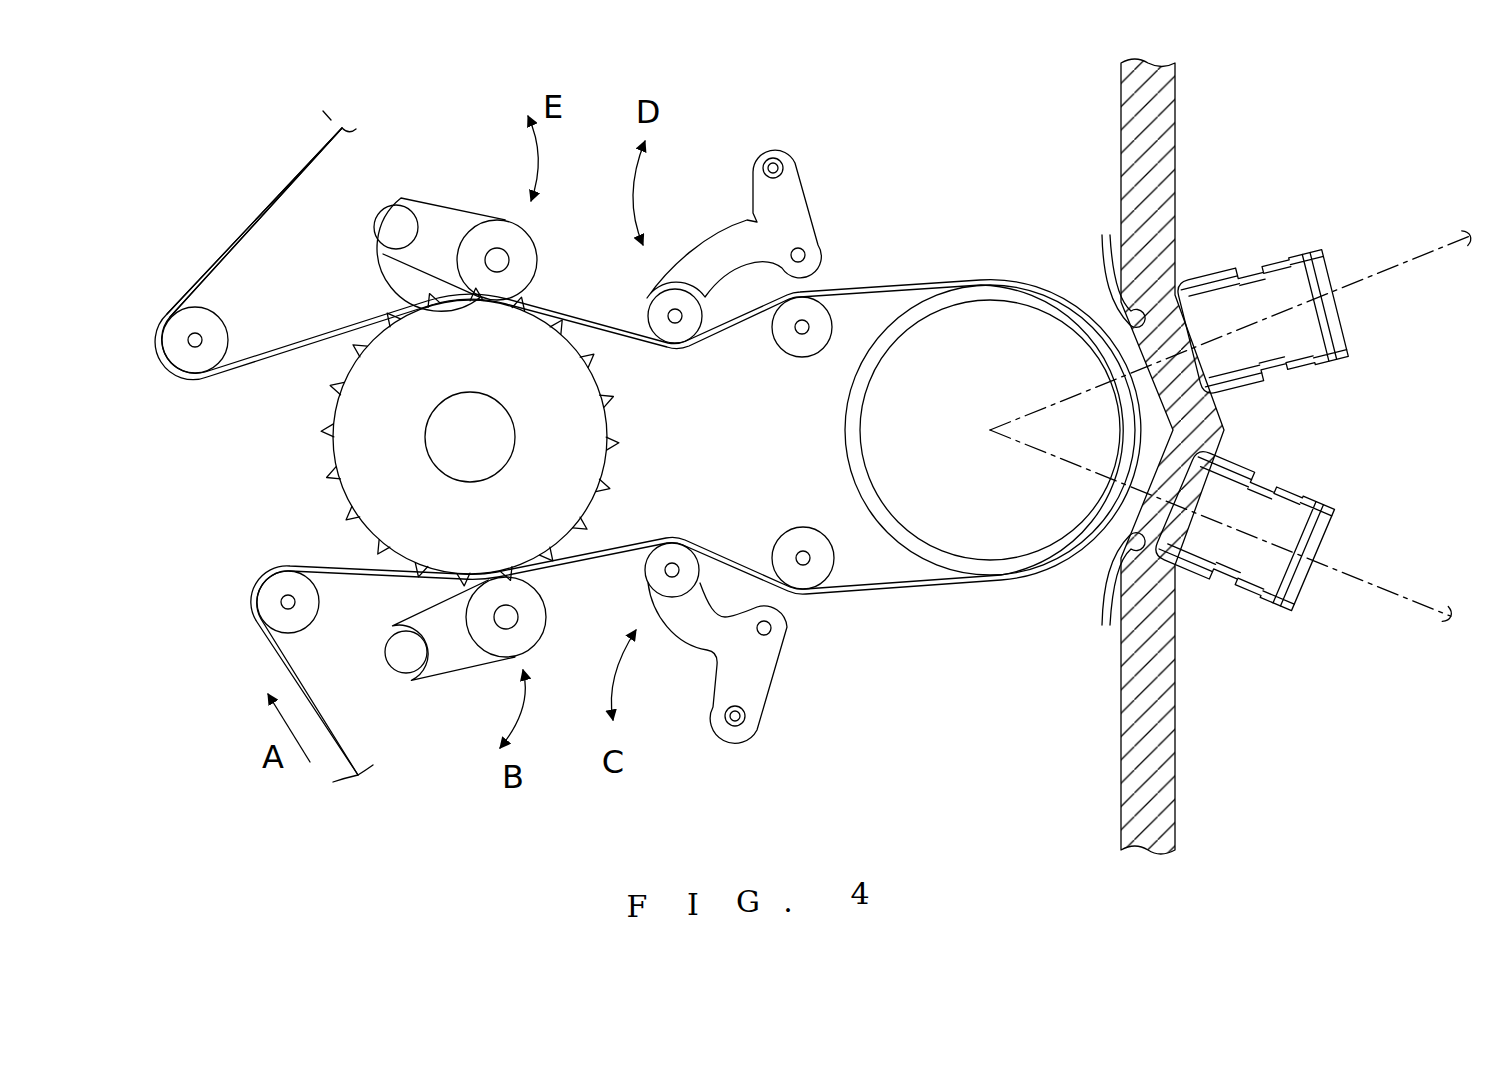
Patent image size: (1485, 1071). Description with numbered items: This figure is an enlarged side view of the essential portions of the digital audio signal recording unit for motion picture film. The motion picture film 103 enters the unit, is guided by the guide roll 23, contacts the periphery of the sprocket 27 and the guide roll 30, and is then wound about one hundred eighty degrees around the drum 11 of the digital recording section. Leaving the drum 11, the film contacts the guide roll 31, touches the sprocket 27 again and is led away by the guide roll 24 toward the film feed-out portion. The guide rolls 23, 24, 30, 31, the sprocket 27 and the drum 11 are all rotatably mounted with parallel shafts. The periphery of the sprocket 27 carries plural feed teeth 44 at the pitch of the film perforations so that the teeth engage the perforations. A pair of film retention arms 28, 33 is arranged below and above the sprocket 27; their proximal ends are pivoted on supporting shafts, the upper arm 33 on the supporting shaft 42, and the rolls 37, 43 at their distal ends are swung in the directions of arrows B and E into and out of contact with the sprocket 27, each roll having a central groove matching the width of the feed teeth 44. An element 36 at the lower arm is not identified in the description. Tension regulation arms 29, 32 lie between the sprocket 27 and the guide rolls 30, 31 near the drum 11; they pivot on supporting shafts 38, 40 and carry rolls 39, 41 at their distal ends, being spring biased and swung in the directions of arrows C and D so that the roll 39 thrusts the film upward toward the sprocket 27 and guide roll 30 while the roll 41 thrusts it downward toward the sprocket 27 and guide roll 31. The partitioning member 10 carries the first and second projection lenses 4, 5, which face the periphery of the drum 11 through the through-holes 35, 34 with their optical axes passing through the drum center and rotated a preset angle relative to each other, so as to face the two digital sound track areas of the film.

The first projection lens 4 is at (1313, 357).
The second projection lens 5 is at (1320, 497).
The partitioning member 10 is at (1177, 733).
The drum 11 is at (997, 533).
The guide roll 23 is at (268, 613).
The guide roll 24 is at (182, 327).
The sprocket 27 is at (353, 488).
The film retention arm 28 is at (458, 652).
The tension regulation arm 29 is at (712, 638).
The guide roll 30 is at (818, 572).
The guide roll 31 is at (820, 313).
The tension regulation arm 32 is at (715, 233).
The film retention arm 33 is at (452, 222).
The through-hole 34 is at (1110, 585).
The through-hole 35 is at (1110, 270).
The roller 36 is at (403, 658).
The roll 37 is at (532, 633).
The supporting shaft 38 is at (745, 717).
The roll 39 is at (652, 575).
The supporting shaft 40 is at (787, 163).
The roll 41 is at (683, 293).
The supporting shaft 42 is at (397, 215).
The roll 43 is at (530, 243).
The feed teeth 44 is at (332, 405).
The motion picture film 103 is at (295, 183).